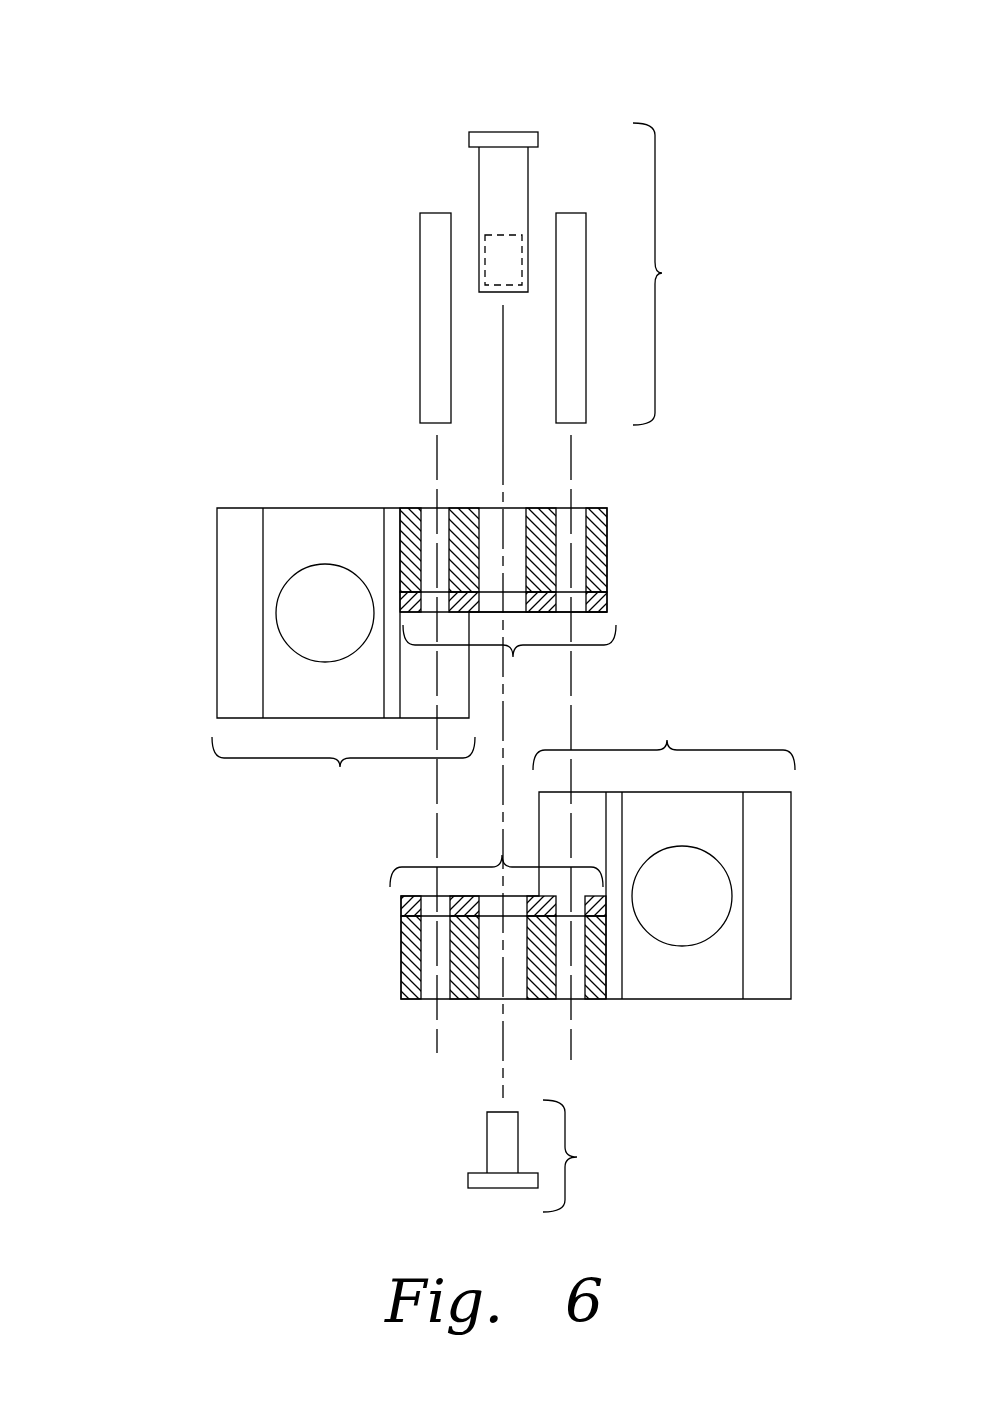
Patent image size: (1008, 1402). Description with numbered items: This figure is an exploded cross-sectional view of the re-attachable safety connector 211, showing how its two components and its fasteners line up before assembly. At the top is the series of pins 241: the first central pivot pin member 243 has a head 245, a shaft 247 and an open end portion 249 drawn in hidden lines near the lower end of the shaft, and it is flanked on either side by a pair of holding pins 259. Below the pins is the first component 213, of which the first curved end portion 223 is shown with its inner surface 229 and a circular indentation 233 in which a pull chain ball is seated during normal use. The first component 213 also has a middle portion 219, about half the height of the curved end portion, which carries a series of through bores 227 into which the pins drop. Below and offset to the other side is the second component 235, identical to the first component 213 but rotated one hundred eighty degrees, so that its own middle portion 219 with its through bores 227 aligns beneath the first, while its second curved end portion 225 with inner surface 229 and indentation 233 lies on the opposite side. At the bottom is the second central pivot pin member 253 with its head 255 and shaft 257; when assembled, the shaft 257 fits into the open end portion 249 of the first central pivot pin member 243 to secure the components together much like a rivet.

The re-attachable safety connector 211 is at (758, 148).
The first component 213 is at (190, 615).
The middle portion 219 is at (503, 756).
The first curved end portion 223 is at (343, 773).
The second curved end portion 225 is at (664, 737).
The through-bores 227 is at (442, 515).
The inner surface 229 is at (276, 522).
The indentation 233 is at (321, 580).
The second component 235 is at (368, 952).
The series of pins 241 is at (518, 214).
The first central pivot pin member 243 is at (459, 180).
The head 245 is at (469, 137).
The shaft 247 is at (479, 173).
The open end portion 249 is at (500, 297).
The second central pivot pin member 253 is at (499, 1156).
The head 255 is at (468, 1178).
The shaft 257 is at (487, 1137).
The holding pins 259 is at (586, 250).